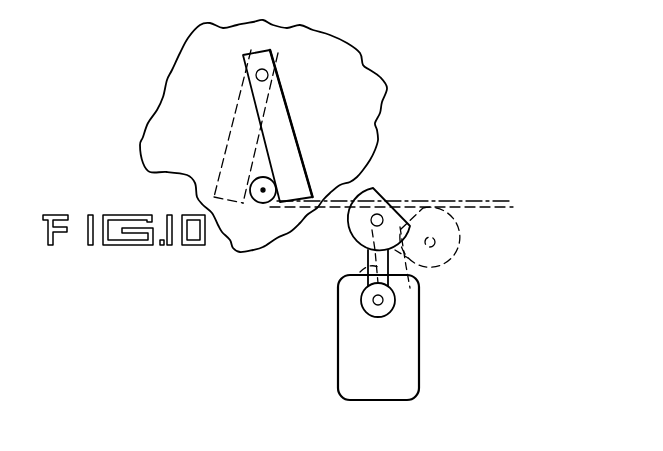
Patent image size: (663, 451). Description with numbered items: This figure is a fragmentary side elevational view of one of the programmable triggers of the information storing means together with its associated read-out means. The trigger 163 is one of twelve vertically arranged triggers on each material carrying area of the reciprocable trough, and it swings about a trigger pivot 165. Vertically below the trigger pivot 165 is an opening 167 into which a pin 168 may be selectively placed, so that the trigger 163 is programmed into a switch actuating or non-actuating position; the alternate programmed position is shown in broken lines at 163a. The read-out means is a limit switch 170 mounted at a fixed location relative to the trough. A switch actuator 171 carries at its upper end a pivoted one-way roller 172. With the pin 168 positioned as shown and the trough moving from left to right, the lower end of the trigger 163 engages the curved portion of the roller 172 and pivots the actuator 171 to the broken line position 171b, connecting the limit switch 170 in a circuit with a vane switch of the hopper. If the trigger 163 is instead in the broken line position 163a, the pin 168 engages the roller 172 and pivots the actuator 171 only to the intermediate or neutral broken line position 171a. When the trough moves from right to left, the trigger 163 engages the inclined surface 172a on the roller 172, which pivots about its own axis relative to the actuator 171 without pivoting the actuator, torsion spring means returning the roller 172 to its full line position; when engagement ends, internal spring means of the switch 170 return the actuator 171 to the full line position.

The trigger 163 is at (288, 132).
The broken line position of trigger 163a is at (232, 160).
The trigger pivot 165 is at (268, 73).
The opening 167 is at (272, 185).
The pin 168 is at (262, 205).
The limit switch 170 is at (337, 336).
The switch actuator 171 is at (367, 262).
The intermediate or neutral broken line position of actuator 171a is at (358, 280).
The broken line position of actuator 171b is at (410, 286).
The one-way roller 172 is at (362, 226).
The inclined surface 172a is at (377, 198).